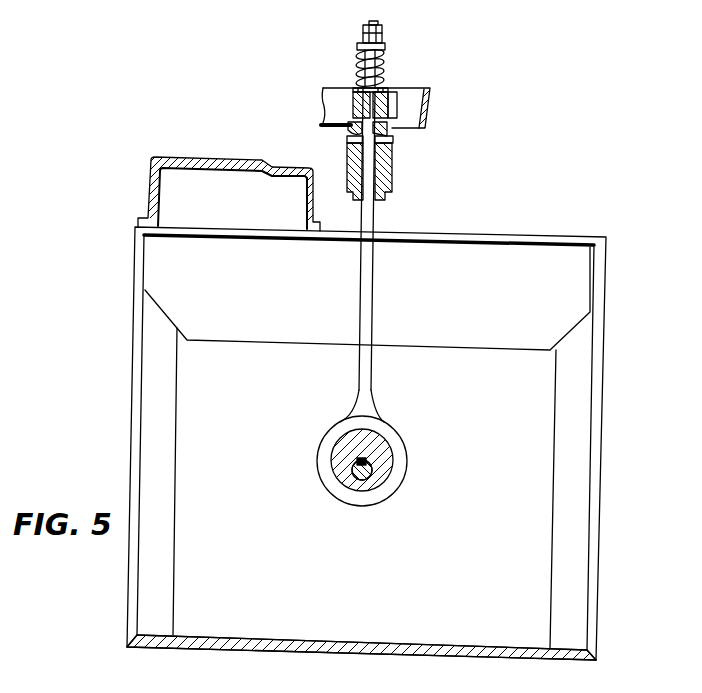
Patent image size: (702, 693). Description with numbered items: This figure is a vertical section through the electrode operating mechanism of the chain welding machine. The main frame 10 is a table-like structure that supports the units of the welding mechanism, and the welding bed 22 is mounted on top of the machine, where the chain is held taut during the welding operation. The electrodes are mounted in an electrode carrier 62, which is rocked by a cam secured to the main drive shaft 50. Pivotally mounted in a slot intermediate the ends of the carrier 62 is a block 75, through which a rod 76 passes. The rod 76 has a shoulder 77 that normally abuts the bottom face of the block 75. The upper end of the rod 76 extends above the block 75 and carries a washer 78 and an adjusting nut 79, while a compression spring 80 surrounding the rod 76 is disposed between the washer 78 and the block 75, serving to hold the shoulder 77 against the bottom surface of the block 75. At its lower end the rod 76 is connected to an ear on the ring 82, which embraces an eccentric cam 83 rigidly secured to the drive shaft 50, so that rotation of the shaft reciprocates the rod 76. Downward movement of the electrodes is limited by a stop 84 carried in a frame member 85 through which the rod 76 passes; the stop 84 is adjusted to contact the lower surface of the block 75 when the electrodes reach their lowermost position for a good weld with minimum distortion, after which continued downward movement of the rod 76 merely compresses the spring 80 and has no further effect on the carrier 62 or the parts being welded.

The main frame 10 is at (165, 365).
The welding bed 22 is at (207, 175).
The main drive shaft 50 is at (372, 475).
The electrode carrier 62 is at (410, 107).
The block 75 is at (392, 95).
The rod 76 is at (370, 207).
The shoulder 77 is at (355, 135).
The washer 78 is at (356, 46).
The adjusting nut 79 is at (383, 35).
The compression spring 80 is at (385, 60).
The ring 82 is at (392, 435).
The eccentric cam 83 is at (380, 458).
The stop 84 is at (353, 126).
The frame member 85 is at (390, 140).